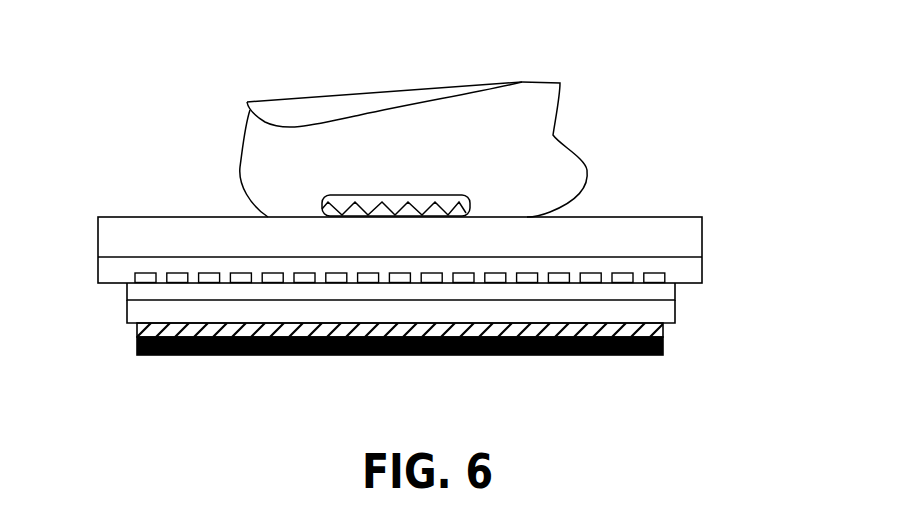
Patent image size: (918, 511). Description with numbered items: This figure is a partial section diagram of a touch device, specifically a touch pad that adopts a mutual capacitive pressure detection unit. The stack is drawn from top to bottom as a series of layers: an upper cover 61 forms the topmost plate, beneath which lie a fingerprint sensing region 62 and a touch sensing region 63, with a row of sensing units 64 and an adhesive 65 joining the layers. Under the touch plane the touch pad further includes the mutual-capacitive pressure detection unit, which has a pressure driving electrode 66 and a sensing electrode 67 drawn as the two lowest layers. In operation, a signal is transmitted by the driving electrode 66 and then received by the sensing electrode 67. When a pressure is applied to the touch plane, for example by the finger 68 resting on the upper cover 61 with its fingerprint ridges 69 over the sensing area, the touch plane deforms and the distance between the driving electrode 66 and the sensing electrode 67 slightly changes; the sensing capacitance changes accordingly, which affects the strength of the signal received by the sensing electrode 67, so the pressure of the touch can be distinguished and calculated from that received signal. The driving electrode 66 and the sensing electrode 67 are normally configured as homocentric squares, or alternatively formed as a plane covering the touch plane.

The upper cover 61 is at (608, 233).
The fingerprint sensing region 62 is at (690, 270).
The touch sensing region 63 is at (665, 313).
The sensing units 64 is at (137, 275).
The adhesive 65 is at (135, 287).
The pressure driving electrode 66 is at (663, 325).
The sensing electrode 67 is at (665, 350).
The finger 68 is at (522, 82).
The fingerprint ridge region 69 is at (340, 203).